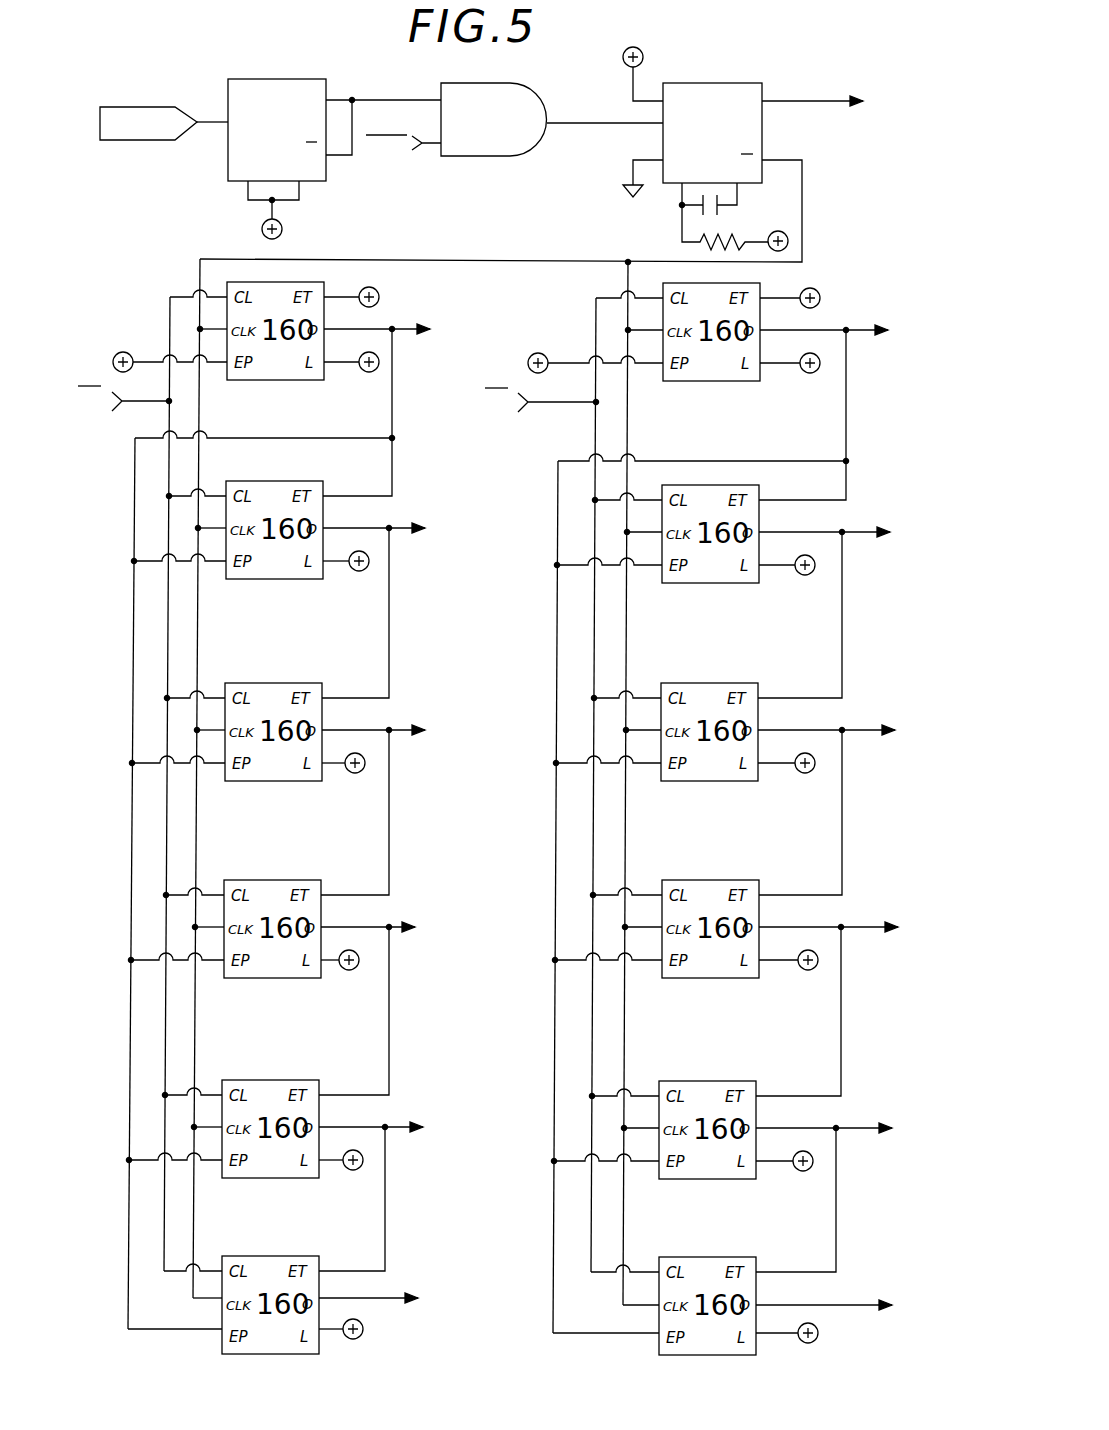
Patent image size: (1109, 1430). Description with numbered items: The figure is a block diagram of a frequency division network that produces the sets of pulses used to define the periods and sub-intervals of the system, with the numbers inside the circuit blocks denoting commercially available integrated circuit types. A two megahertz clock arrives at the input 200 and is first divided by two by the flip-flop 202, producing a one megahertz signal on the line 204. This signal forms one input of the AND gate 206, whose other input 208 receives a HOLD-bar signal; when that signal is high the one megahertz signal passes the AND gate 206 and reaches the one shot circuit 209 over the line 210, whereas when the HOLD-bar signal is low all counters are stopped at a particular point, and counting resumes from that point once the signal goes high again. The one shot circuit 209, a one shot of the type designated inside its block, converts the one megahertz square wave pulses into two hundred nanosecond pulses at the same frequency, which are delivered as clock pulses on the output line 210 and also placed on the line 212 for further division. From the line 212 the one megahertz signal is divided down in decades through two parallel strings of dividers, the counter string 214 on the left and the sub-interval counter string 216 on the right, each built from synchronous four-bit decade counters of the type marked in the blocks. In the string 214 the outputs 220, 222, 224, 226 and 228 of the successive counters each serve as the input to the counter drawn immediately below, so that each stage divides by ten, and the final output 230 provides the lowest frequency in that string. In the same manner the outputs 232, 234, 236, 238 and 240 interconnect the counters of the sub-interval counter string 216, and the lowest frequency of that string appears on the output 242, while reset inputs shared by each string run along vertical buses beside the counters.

The 2 MHz input 200 is at (207, 120).
The flip-flop 202 is at (276, 79).
The line 204 is at (383, 100).
The AND gate 206 is at (535, 88).
The HOLD-bar input line 208 is at (427, 145).
The one shot circuit 209 is at (758, 52).
The line 210 is at (568, 123).
The line 212 is at (803, 203).
The counter string 214 is at (208, 1337).
The sub-interval counter string 216 is at (651, 1339).
The counter output 220 is at (430, 386).
The counter output 222 is at (389, 640).
The counter output 224 is at (389, 840).
The counter output 226 is at (389, 1038).
The counter output 228 is at (385, 1225).
The lowest frequency output 230 is at (370, 1290).
The counter output 232 is at (846, 425).
The counter output 234 is at (842, 640).
The counter output 236 is at (842, 830).
The counter output 238 is at (841, 1032).
The counter output 240 is at (836, 1222).
The lowest frequency output 242 is at (848, 1302).